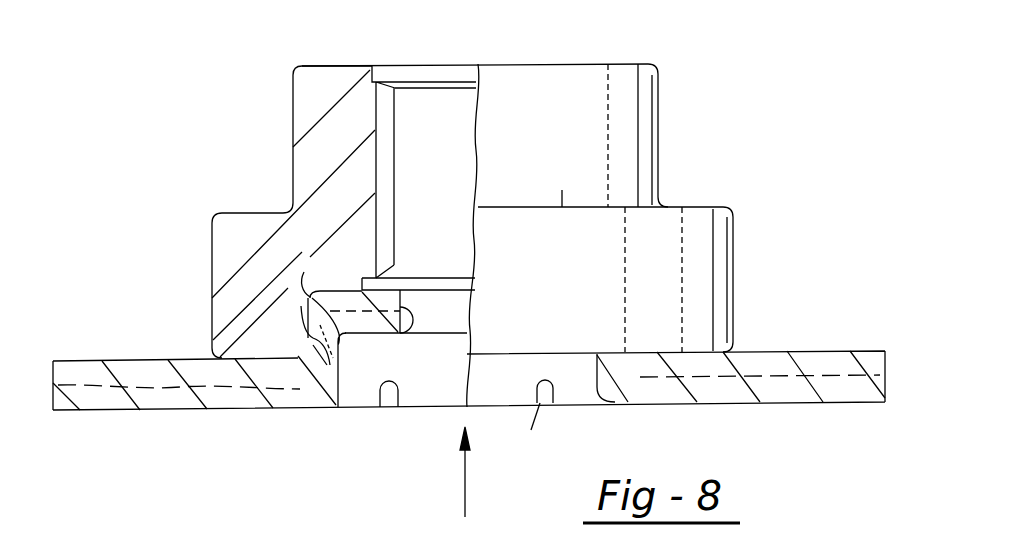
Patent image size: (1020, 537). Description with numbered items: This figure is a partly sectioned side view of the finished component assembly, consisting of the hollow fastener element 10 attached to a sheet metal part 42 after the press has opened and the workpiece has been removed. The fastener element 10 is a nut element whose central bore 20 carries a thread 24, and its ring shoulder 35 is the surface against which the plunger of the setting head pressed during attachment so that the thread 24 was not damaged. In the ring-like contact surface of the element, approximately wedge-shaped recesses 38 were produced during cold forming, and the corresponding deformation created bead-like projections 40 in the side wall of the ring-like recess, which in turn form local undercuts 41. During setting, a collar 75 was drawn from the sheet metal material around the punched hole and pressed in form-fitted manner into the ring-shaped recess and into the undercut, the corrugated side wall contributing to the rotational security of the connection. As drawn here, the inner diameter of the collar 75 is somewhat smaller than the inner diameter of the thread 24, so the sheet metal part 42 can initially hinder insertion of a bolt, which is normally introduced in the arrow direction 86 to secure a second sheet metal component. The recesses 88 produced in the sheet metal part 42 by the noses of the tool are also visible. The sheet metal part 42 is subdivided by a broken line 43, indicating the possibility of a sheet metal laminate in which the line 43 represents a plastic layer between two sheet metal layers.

The fastener element 10 is at (733, 268).
The bore 20 is at (400, 167).
The thread 24 is at (376, 110).
The ring shoulder 35 is at (696, 207).
The recesses 38 is at (298, 338).
The bead-like projections 40 is at (308, 322).
The undercuts 41 is at (304, 272).
The sheet metal part 42 is at (757, 402).
The broken line 43 is at (112, 392).
The collar 75 is at (402, 334).
The arrow direction 86 is at (464, 476).
The recesses 88 is at (298, 434).